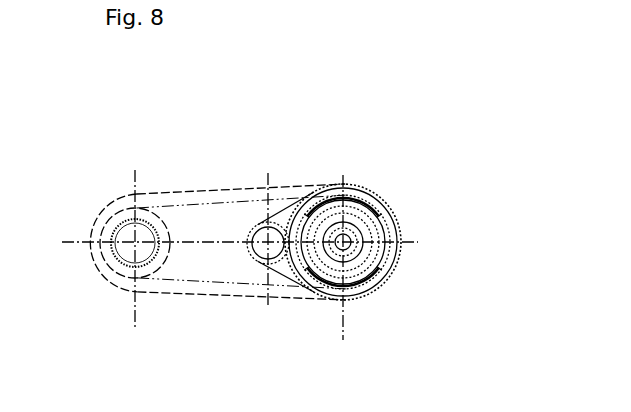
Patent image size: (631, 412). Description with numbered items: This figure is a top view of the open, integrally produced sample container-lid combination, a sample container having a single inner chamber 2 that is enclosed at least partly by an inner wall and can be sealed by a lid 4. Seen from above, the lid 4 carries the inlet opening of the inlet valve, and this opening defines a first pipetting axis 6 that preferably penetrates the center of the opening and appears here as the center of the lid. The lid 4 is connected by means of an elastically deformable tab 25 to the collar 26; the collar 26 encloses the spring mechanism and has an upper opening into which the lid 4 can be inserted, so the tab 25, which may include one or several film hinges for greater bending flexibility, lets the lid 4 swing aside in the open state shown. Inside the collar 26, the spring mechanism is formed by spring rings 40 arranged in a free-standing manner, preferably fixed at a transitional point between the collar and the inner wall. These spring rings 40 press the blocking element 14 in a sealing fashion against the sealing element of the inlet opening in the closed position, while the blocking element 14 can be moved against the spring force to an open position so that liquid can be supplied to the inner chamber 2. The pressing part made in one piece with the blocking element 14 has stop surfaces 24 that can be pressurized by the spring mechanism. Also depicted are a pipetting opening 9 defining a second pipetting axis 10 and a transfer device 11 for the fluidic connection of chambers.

The inner chamber 2 is at (353, 253).
The lid 4 is at (95, 295).
The first pipetting axis 6 is at (133, 208).
The pipetting opening 9 is at (259, 231).
The second pipetting axis 10 is at (270, 222).
The transfer device 11 is at (351, 234).
The blocking element 14 is at (152, 270).
The stop surfaces 24 is at (118, 205).
The elastically deformable tab 25 is at (238, 285).
The collar 26 is at (372, 297).
The spring rings 40 is at (381, 203).